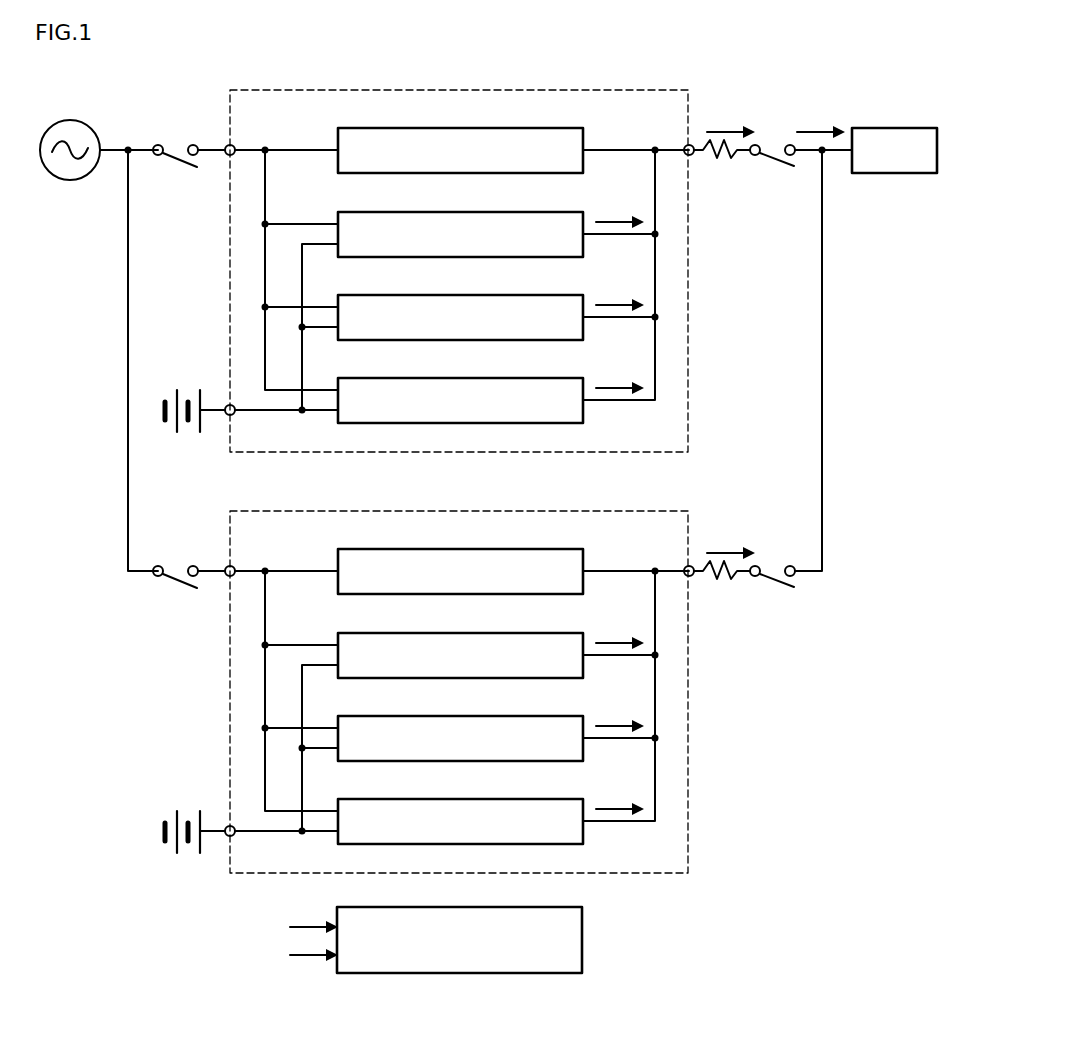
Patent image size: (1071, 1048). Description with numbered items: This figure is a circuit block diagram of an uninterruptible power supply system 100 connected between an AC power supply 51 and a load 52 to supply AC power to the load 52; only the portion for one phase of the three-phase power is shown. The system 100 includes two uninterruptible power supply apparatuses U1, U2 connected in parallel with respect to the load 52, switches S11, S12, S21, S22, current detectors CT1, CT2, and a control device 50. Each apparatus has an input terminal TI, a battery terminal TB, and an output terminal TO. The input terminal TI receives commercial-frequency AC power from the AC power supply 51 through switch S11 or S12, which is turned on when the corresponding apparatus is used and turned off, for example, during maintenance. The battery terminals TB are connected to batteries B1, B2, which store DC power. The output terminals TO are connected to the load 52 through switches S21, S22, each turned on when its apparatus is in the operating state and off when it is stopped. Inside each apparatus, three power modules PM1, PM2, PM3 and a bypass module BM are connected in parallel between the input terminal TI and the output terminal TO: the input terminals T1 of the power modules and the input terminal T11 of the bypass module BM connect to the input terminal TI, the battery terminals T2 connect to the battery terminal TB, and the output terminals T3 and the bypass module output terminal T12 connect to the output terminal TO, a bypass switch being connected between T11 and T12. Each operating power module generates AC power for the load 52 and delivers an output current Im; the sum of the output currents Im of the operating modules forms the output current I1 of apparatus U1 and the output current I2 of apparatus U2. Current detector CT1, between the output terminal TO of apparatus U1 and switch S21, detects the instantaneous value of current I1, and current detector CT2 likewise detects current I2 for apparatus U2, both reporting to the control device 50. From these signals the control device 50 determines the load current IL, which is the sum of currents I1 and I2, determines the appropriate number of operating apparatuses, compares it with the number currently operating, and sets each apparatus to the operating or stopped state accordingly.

The AC power supply 51 is at (73, 121).
The load 52 is at (885, 128).
The control device 50 is at (485, 907).
The uninterruptible power supply system 100 is at (838, 769).
The uninterruptible power supply apparatus U1 is at (630, 90).
The uninterruptible power supply apparatus U2 is at (630, 511).
The input terminal TI is at (228, 146).
The output terminal TO is at (692, 145).
The battery terminal TB is at (228, 418).
The input terminal T11 is at (337, 147).
The output terminal T12 is at (587, 147).
The input terminal T1 is at (337, 222).
The battery terminal T2 is at (337, 246).
The output terminal T3 is at (586, 232).
The bypass module BM is at (481, 128).
The power module PM1 is at (483, 212).
The power module PM2 is at (483, 295).
The power module PM3 is at (483, 378).
The battery B1 is at (188, 390).
The battery B2 is at (188, 811).
The switch S11 is at (180, 167).
The switch S12 is at (180, 588).
The switch S21 is at (777, 167).
The switch S22 is at (777, 588).
The current detector CT1 is at (720, 160).
The current detector CT2 is at (720, 581).
The AC current I1 is at (510, 521).
The AC current I2 is at (510, 746).
The load current IL is at (821, 120).
The output current Im is at (620, 502).